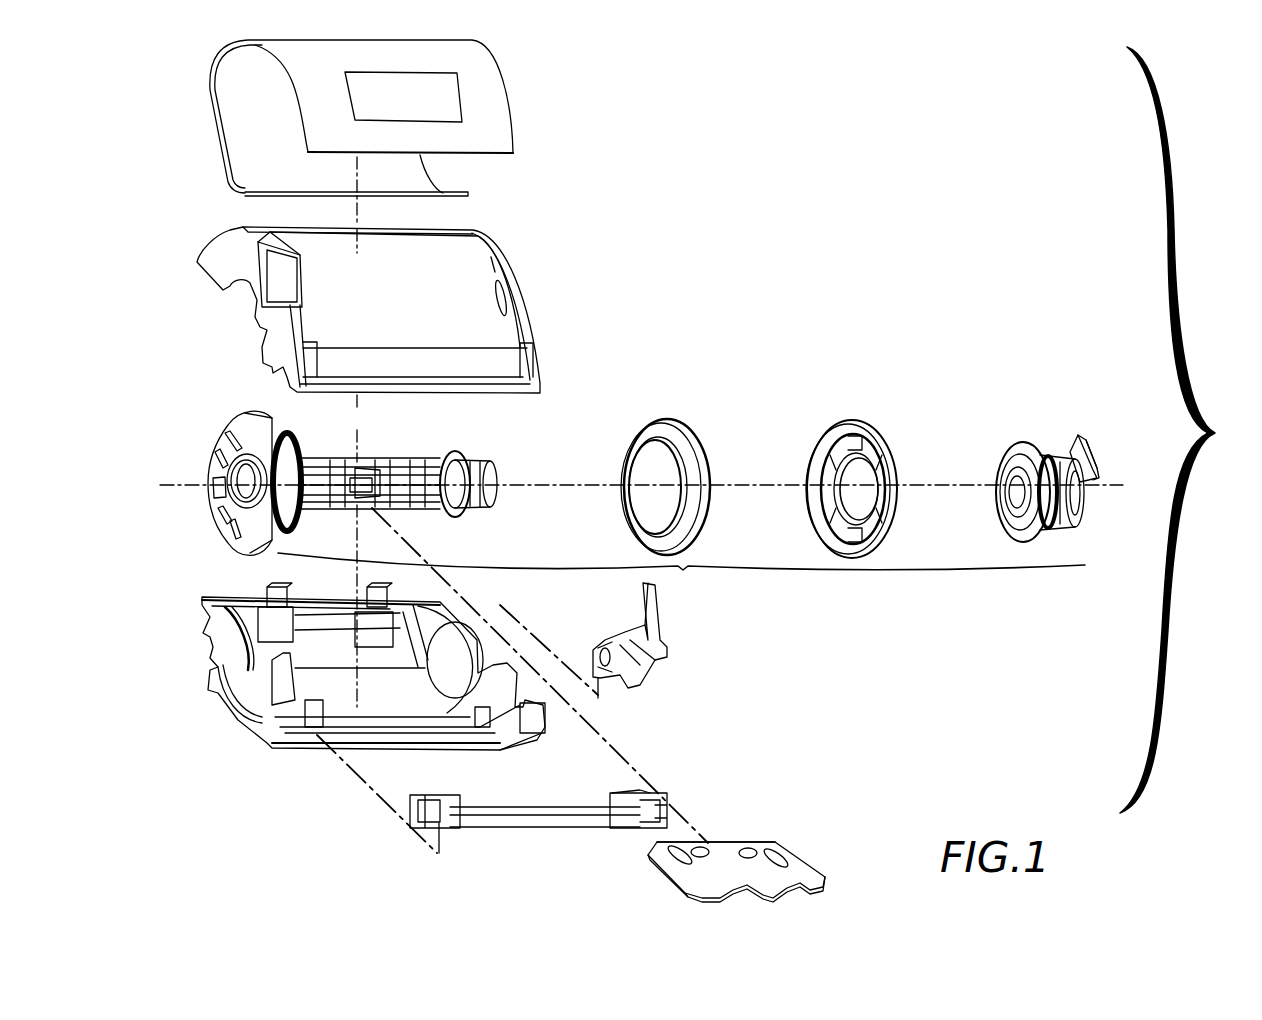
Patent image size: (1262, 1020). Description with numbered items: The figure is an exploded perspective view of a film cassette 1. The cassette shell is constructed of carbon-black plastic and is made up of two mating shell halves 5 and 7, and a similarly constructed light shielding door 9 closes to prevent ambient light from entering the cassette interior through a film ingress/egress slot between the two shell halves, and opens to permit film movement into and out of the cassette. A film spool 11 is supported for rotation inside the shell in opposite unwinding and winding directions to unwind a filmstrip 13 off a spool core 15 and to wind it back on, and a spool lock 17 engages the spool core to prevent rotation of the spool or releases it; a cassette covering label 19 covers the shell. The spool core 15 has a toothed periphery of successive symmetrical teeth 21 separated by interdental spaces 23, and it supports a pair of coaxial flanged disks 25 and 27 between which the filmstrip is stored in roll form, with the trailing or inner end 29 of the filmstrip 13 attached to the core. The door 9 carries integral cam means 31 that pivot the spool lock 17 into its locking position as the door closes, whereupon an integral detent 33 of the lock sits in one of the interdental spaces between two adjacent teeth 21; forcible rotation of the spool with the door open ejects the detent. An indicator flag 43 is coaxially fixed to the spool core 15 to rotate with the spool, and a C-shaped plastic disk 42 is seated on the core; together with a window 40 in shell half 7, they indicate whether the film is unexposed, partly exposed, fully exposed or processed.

The film cassette 1 is at (1190, 430).
The shell half 5 is at (523, 275).
The shell half 7 is at (247, 723).
The light shielding door 9 is at (518, 830).
The film spool 11 is at (681, 578).
The filmstrip 13 is at (803, 870).
The spool core 15 is at (437, 457).
The spool lock 17 is at (667, 650).
The cassette covering label 19 is at (497, 58).
The teeth 21 is at (1062, 453).
The interdental spaces 23 is at (1082, 437).
The flanged disk 25 is at (842, 420).
The flanged disk 27 is at (665, 417).
The trailing or inner end 29 is at (720, 842).
The cam means 31 is at (640, 793).
The detent 33 is at (630, 642).
The window 40 is at (243, 697).
The disk 42 is at (243, 427).
The indicator flag 43 is at (1097, 468).